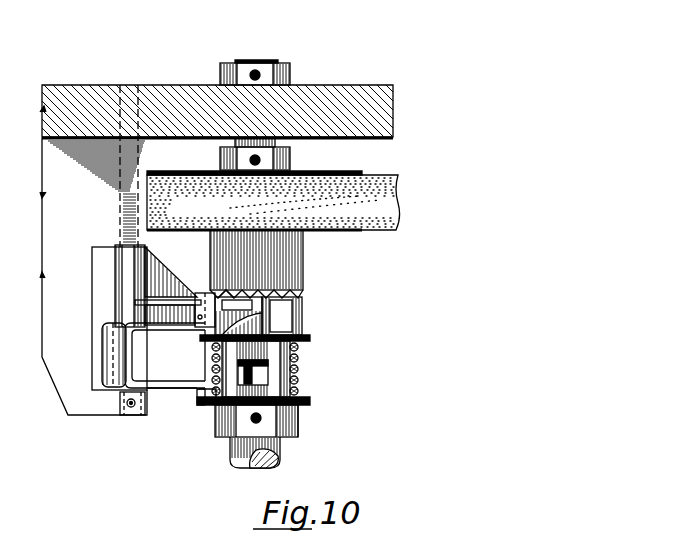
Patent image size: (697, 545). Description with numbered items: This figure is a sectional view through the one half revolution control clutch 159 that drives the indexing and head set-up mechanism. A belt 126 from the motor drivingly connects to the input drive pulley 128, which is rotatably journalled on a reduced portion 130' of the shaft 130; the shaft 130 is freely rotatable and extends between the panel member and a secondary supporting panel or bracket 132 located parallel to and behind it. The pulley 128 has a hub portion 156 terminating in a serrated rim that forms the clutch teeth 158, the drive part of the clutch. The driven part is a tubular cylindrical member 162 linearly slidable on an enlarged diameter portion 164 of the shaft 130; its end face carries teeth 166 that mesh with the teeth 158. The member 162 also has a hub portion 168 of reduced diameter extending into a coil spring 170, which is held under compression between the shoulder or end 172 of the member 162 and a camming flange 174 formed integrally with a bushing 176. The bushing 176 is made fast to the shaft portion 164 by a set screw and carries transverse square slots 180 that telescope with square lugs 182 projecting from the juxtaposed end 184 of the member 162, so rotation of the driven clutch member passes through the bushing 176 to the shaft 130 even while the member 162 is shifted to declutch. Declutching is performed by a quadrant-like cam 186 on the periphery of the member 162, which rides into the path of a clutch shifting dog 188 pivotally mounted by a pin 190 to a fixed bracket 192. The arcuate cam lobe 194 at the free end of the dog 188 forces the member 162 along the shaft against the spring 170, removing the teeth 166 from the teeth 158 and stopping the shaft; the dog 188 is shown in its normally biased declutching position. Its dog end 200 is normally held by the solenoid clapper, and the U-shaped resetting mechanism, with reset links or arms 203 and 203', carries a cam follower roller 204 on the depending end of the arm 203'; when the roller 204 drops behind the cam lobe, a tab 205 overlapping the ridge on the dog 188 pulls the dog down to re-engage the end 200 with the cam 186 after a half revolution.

The belt 126 is at (375, 176).
The input drive pulley 128 is at (313, 172).
The shaft 130 is at (268, 56).
The reduced portion of shaft 130' is at (232, 50).
The secondary supporting panel or bracket 132 is at (343, 90).
The hub portion 156 is at (304, 266).
The clutch teeth 158 is at (300, 295).
The one half revolution control clutch 159 is at (169, 449).
The tubular cylindrical member 162 is at (303, 338).
The enlarged diameter portion of shaft 164 is at (281, 464).
The teeth 166 is at (300, 292).
The hub portion of reduced diameter 168 is at (300, 358).
The coil spring 170 is at (212, 369).
The shoulder or end of member 162 172 is at (298, 346).
The camming flange 174 is at (303, 406).
The bushing 176 is at (224, 438).
The transverse square slots 180 is at (308, 403).
The square lugs 182 is at (300, 386).
The end of clutch member 184 is at (299, 378).
The quadrant-like cam 186 is at (282, 296).
The clutch shifting dog 188 is at (166, 272).
The pin 190 is at (119, 230).
The fixed bracket 192 is at (52, 150).
The arcuate cam lobe 194 is at (260, 314).
The dog end 200 is at (214, 342).
The reset link or arm 203 is at (127, 307).
The reset link or arm 203' is at (172, 409).
The cam follower roller 204 is at (198, 408).
The tab 205 is at (196, 325).